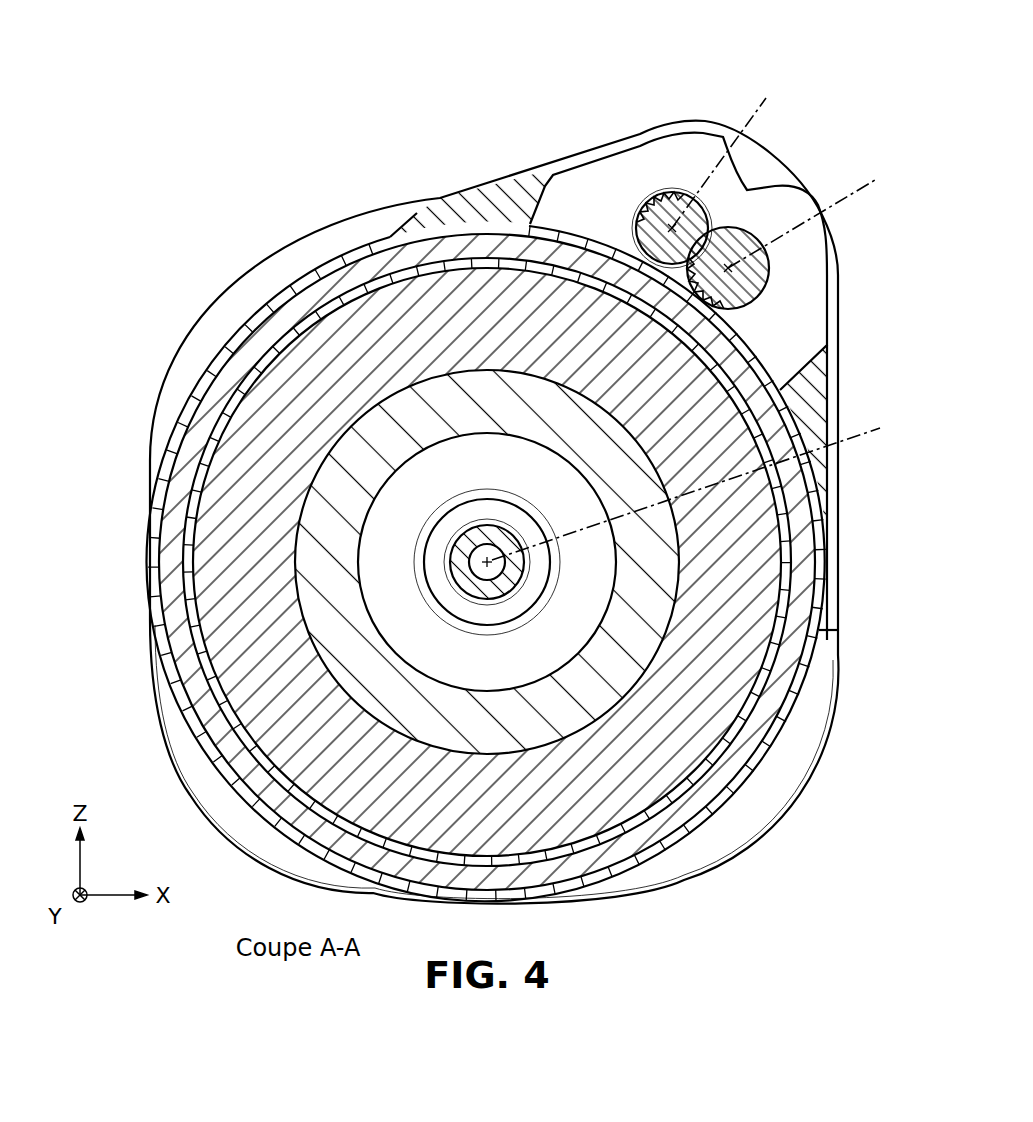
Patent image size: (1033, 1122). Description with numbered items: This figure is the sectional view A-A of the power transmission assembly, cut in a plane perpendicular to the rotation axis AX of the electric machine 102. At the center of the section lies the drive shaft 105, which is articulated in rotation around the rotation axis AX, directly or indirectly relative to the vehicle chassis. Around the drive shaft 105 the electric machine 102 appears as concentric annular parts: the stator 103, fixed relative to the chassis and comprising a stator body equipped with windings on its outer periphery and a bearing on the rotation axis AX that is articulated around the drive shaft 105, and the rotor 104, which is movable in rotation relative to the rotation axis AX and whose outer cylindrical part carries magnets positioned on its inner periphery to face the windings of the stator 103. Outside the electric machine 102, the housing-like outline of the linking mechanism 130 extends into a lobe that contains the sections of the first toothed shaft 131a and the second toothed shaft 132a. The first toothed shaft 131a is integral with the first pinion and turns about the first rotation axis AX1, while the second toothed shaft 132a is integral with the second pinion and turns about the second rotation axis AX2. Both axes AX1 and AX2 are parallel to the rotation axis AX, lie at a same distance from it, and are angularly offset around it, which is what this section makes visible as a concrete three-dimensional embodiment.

The electric machine 102 is at (669, 740).
The stator 103 is at (317, 360).
The rotor 104 is at (432, 255).
The drive shaft 105 is at (462, 552).
The linking mechanism 130 is at (679, 94).
The first toothed shaft 131a is at (740, 253).
The second toothed shaft 132a is at (654, 199).
The rotation axis AX is at (711, 488).
The first rotation axis AX1 is at (831, 215).
The second rotation axis AX2 is at (737, 145).